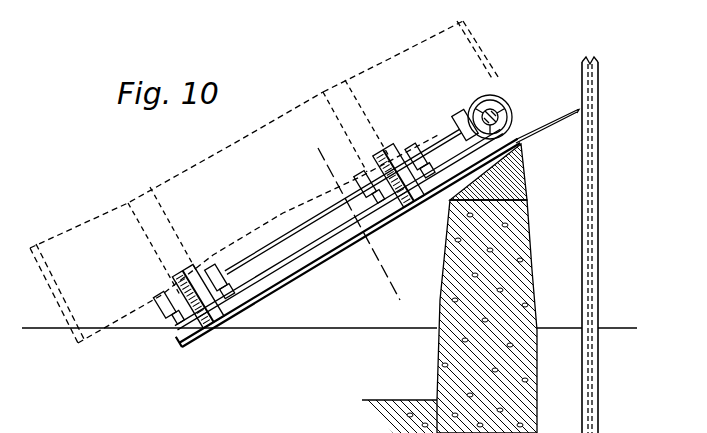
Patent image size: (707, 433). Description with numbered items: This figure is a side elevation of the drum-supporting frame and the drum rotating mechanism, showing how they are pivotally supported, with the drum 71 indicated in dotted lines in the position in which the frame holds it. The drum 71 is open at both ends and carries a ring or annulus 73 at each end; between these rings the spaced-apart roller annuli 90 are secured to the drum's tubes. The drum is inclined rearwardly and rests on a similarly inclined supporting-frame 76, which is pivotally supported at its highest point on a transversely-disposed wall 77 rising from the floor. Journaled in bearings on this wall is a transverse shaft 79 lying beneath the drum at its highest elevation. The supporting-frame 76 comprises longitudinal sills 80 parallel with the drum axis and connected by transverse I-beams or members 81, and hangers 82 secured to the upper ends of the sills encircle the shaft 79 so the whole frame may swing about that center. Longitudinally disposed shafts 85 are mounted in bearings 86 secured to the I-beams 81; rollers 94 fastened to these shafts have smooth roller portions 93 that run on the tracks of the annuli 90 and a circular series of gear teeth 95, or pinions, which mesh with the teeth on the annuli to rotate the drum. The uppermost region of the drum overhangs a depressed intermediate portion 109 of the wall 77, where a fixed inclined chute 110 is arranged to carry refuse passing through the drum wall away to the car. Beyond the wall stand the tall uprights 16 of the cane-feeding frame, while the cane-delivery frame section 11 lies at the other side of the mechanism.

The cane-delivery frame section 11 is at (313, 172).
The uprights 16 is at (593, 225).
The drum 71 is at (387, 62).
The ring or annulus 73 is at (46, 296).
The supporting-frame 76 is at (328, 250).
The transversely-disposed wall 77 is at (525, 222).
The shaft 79 is at (478, 102).
The longitudinal sills 80 is at (300, 268).
The transverse I-beams or members 81 is at (180, 338).
The hangers 82 is at (504, 99).
The longitudinally disposed shafts 85 is at (298, 227).
The bearings 86 is at (163, 300).
The roller annuli 90 is at (323, 93).
The smooth roller portions 93 is at (190, 265).
The rollers 94 is at (210, 302).
The circular series of gear teeth 95 is at (178, 277).
The depressed intermediate portion 109 is at (488, 175).
The fixed inclined chute 110 is at (540, 136).